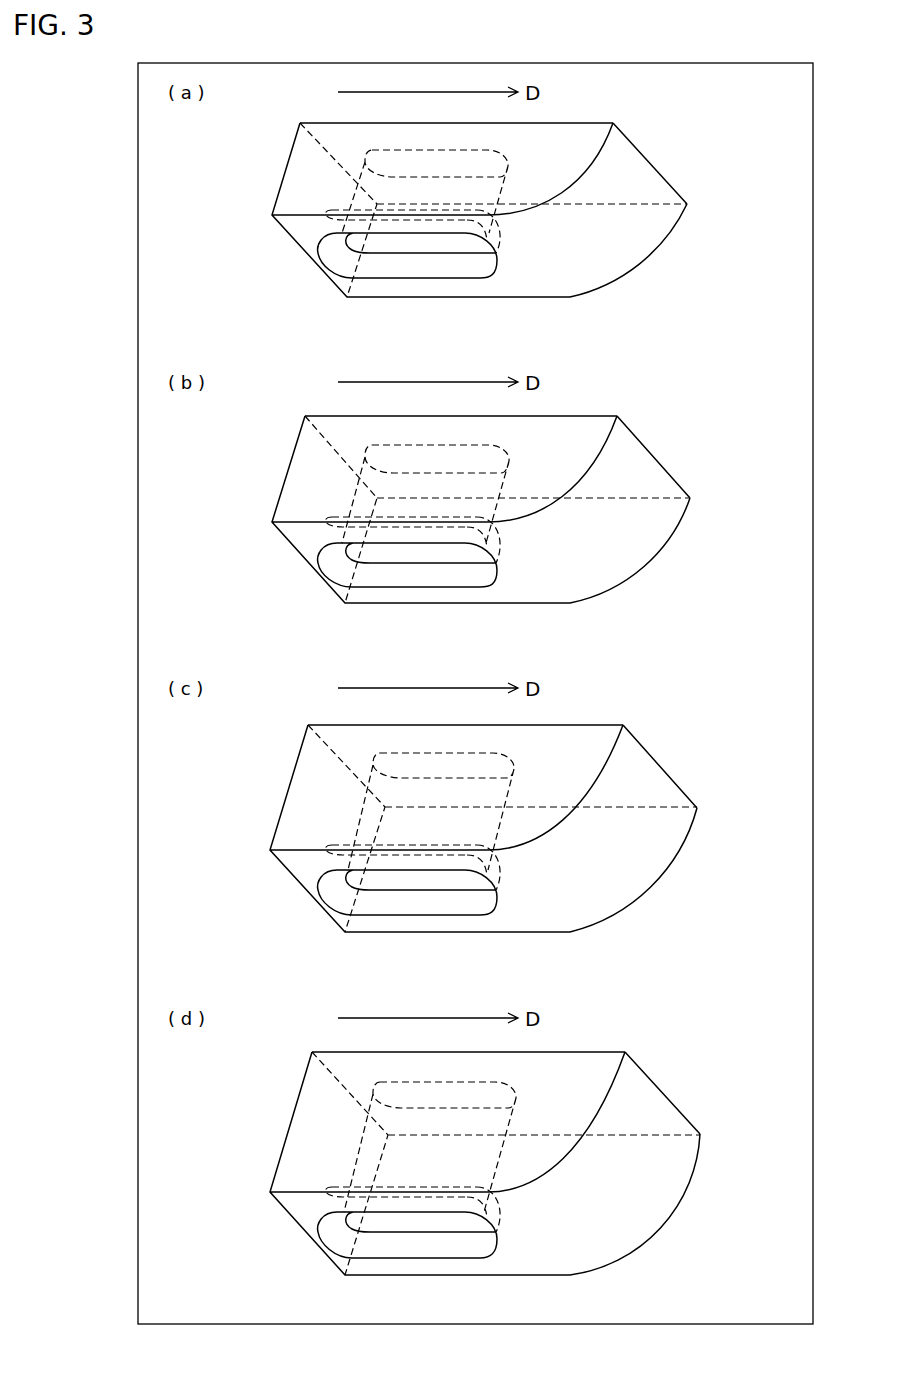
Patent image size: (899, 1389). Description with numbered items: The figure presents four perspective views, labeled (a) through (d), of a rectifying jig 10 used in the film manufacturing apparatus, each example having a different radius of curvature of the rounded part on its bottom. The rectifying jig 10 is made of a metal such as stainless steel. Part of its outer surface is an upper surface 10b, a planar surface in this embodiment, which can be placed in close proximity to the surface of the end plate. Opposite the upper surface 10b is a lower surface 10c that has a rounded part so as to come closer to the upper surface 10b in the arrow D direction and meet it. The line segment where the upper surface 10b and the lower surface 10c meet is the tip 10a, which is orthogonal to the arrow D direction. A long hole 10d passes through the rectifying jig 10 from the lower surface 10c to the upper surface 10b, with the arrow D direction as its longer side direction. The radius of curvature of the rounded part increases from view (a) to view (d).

The rectifying jig 10 is at (713, 109).
The tip 10a is at (667, 168).
The upper surface 10b is at (584, 143).
The lower surface 10c is at (625, 237).
The long hole 10d is at (397, 240).